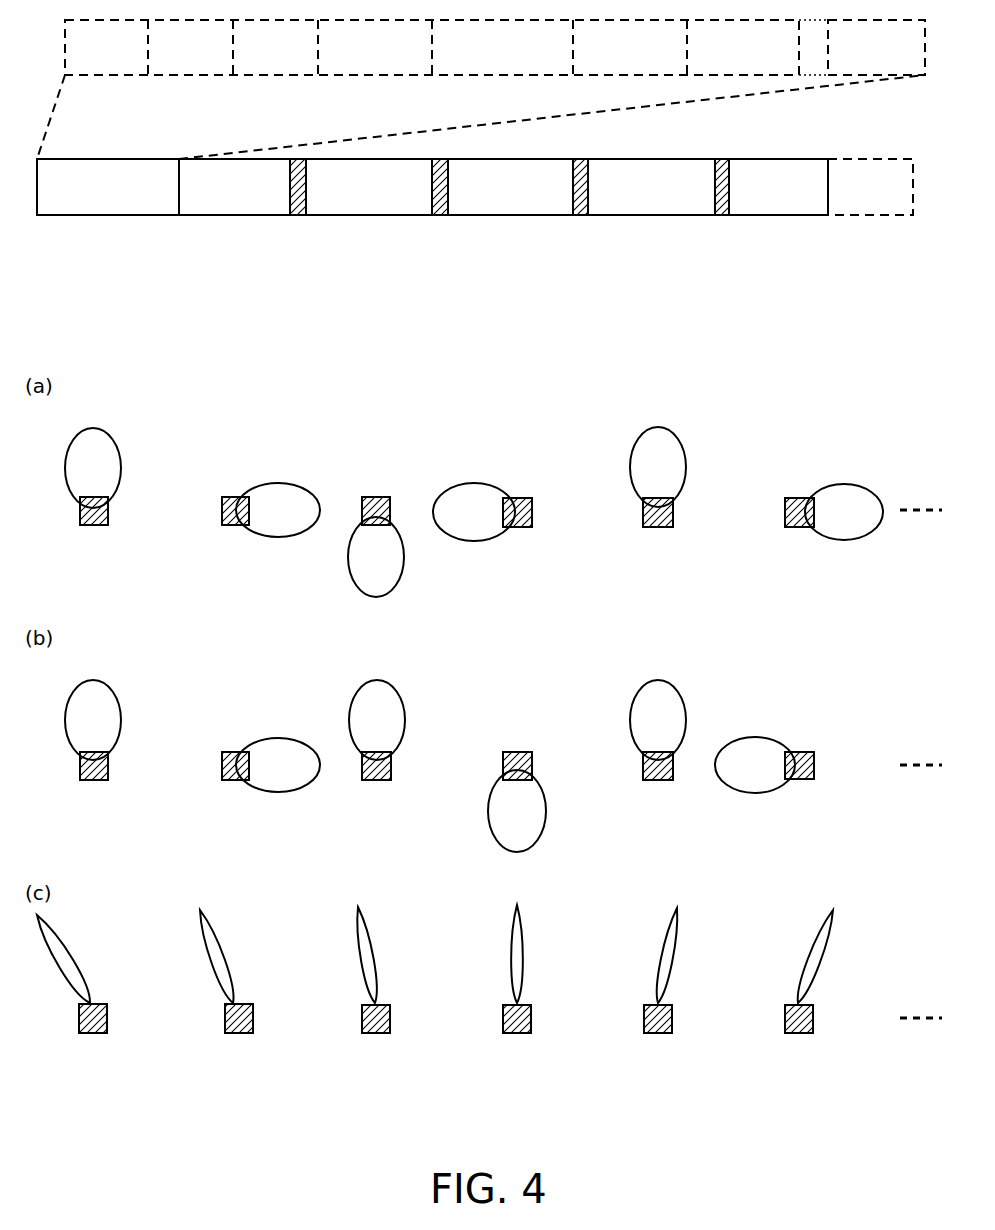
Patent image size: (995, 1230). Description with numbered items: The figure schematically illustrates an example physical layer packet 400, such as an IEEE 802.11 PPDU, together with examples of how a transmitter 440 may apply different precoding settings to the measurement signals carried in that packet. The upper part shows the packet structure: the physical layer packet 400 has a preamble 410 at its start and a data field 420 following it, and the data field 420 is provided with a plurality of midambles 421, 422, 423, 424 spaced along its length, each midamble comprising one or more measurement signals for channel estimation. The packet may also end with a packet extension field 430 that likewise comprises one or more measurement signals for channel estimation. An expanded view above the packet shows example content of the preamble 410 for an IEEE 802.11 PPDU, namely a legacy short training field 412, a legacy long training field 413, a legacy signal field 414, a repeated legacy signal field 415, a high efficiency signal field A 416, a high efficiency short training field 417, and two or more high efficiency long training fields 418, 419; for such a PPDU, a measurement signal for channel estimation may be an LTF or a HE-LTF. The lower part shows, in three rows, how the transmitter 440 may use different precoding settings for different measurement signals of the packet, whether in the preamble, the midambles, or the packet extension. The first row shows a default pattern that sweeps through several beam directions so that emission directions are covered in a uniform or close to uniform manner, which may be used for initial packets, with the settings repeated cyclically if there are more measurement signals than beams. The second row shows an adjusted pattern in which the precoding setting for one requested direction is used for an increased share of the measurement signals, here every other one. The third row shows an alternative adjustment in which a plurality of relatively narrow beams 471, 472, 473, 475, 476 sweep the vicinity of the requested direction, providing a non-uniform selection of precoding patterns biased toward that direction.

The physical layer packet 400 is at (777, 142).
The preamble 410 is at (135, 187).
The legacy short training field 412 is at (106, 49).
The legacy long training field 413 is at (189, 49).
The legacy signal field 414 is at (275, 49).
The repeated legacy signal field 415 is at (374, 49).
The high efficiency signal field A 416 is at (502, 49).
The high efficiency short training field 417 is at (630, 49).
The high efficiency long training field 418 is at (743, 49).
The high efficiency long training field 419 is at (876, 49).
The data field 420 is at (630, 159).
The midamble 421 is at (298, 215).
The midamble 422 is at (445, 215).
The midamble 423 is at (580, 215).
The midamble 424 is at (722, 215).
The packet extension field 430 is at (870, 187).
The transmitter 440 is at (85, 525).
The narrow beam 471 is at (87, 990).
The narrow beam 472 is at (235, 990).
The narrow beam 473 is at (380, 993).
The narrow beam 475 is at (663, 990).
The narrow beam 476 is at (808, 990).